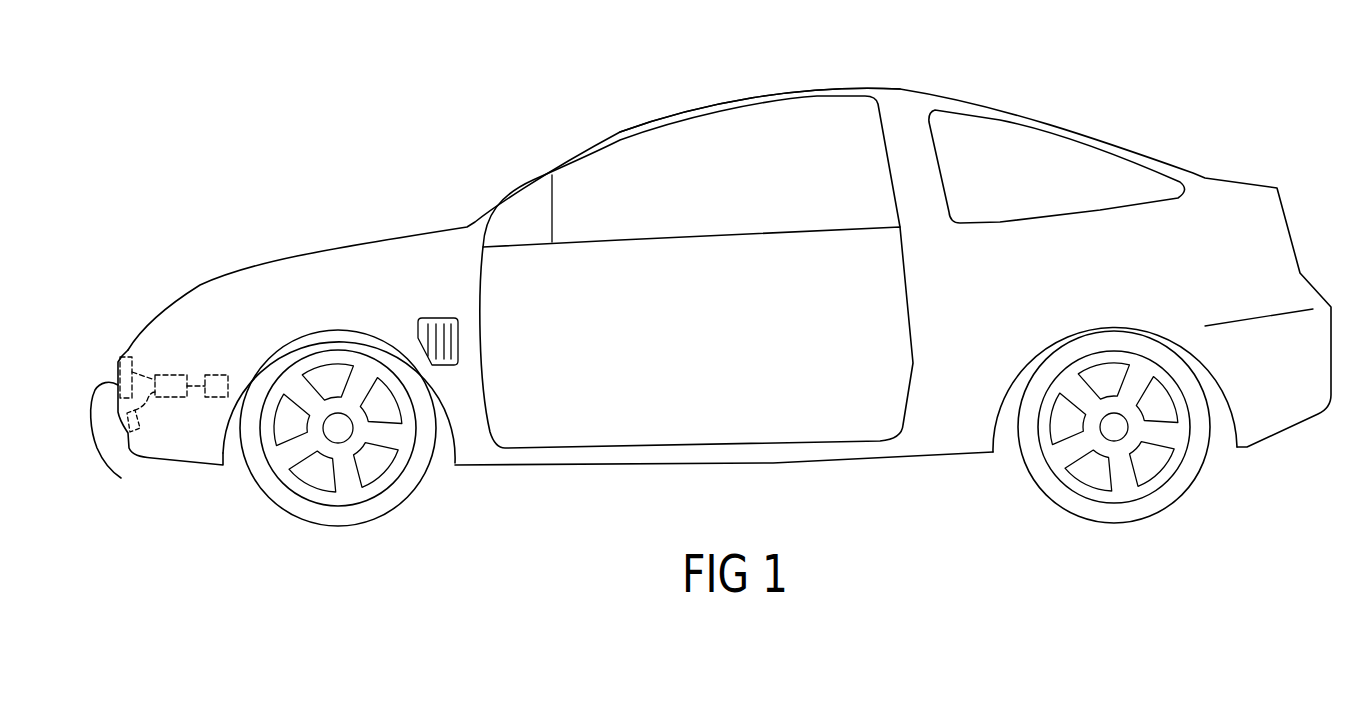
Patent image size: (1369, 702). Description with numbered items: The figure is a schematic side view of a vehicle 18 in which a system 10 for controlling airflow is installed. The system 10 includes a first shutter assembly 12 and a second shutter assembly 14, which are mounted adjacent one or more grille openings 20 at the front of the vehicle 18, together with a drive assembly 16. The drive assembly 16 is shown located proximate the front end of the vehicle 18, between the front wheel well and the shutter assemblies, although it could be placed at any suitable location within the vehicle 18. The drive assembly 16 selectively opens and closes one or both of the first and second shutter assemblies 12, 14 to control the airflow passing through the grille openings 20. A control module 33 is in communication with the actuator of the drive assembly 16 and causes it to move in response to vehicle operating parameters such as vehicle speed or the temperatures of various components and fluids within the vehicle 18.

The system 10 is at (339, 180).
The first shutter assembly 12 is at (150, 449).
The second shutter assembly 14 is at (137, 331).
The drive assembly 16 is at (181, 359).
The vehicle 18 is at (536, 122).
The grille opening 20 is at (130, 432).
The control module 33 is at (226, 359).